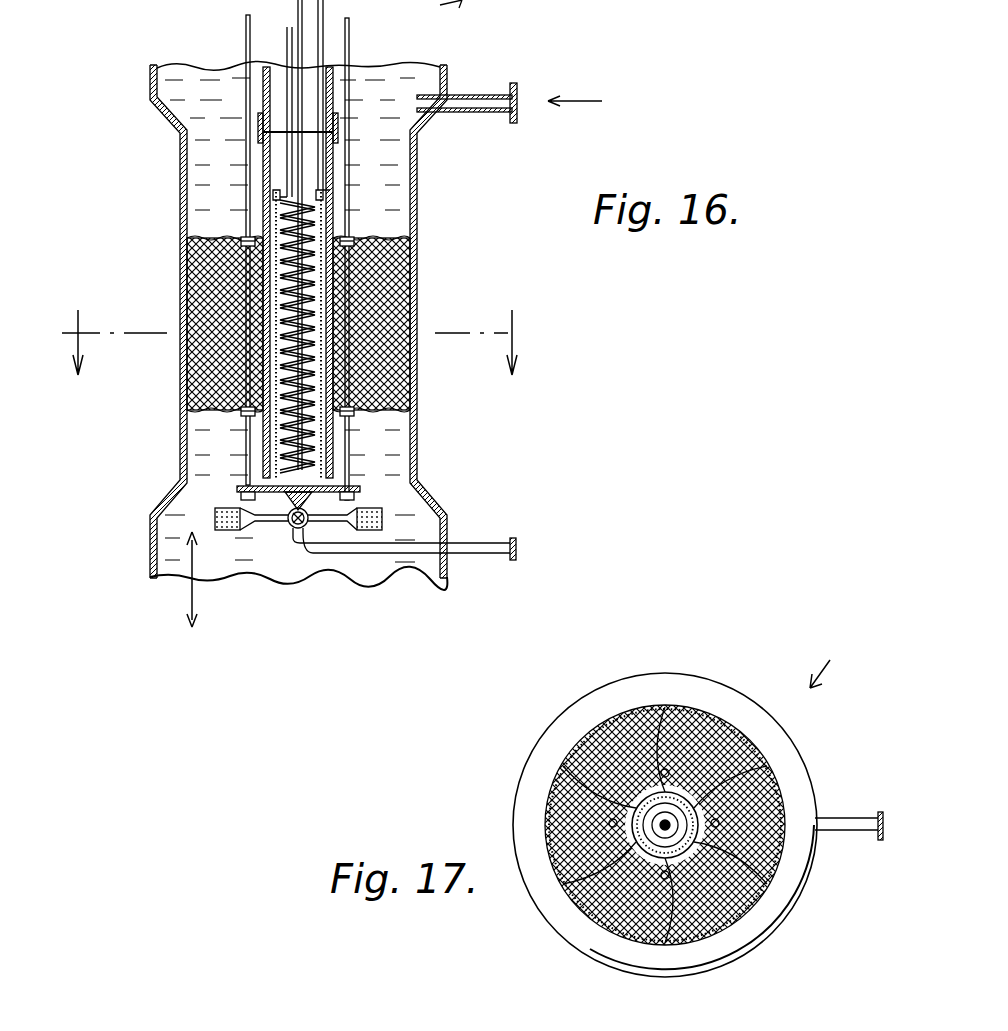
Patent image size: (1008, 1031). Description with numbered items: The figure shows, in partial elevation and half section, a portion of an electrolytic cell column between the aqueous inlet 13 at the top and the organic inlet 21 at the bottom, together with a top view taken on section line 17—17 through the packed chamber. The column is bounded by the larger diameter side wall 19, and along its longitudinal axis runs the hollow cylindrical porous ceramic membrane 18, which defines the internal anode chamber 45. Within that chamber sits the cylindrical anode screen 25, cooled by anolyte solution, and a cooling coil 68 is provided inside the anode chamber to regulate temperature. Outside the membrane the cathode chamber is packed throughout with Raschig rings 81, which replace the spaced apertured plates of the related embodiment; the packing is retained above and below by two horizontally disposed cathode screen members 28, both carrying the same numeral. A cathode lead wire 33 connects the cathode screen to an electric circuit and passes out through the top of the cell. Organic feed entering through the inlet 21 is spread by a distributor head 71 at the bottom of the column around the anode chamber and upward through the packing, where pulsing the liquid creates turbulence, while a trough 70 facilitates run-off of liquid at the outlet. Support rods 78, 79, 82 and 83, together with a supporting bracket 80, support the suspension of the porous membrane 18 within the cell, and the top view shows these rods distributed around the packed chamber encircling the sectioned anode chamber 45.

In FIG. 16, the inlet 13 is at (480, 96).
In FIG. 16, the bottom end wall 17 is at (295, 341).
In FIG. 16, the porous ceramic membrane 18 is at (262, 152).
In FIG. 17, the porous ceramic membrane 18 is at (698, 853).
In FIG. 16, the side wall 19 is at (150, 86).
In FIG. 17, the side wall 19 is at (748, 917).
In FIG. 16, the liquid inlet 21 is at (490, 553).
In FIG. 17, the liquid inlet 21 is at (850, 824).
In FIG. 16, the anode screen 25 is at (327, 390).
In FIG. 17, the anode screen 25 is at (728, 735).
In FIG. 16, the cathode screen member 28 is at (205, 240).
In FIG. 16, the cathode lead wire 33 is at (246, 45).
In FIG. 16, the anode chamber 45 is at (322, 210).
In FIG. 17, the anode chamber 45 is at (610, 917).
In FIG. 16, the cooling coil 68 is at (305, 352).
In FIG. 17, the cooling coil 68 is at (575, 752).
In FIG. 17, the trough 70 is at (827, 660).
In FIG. 16, the distributor head 71 is at (215, 520).
In FIG. 16, the support rod 78 is at (246, 446).
In FIG. 17, the support rod 78 is at (607, 822).
In FIG. 16, the support rod 79 is at (350, 450).
In FIG. 17, the support rod 79 is at (722, 820).
In FIG. 16, the supporting bracket 80 is at (296, 530).
In FIG. 16, the Raschig rings 81 is at (400, 280).
In FIG. 17, the Raschig rings 81 is at (590, 890).
In FIG. 17, the support rod 82 is at (682, 708).
In FIG. 17, the support rod 83 is at (663, 945).